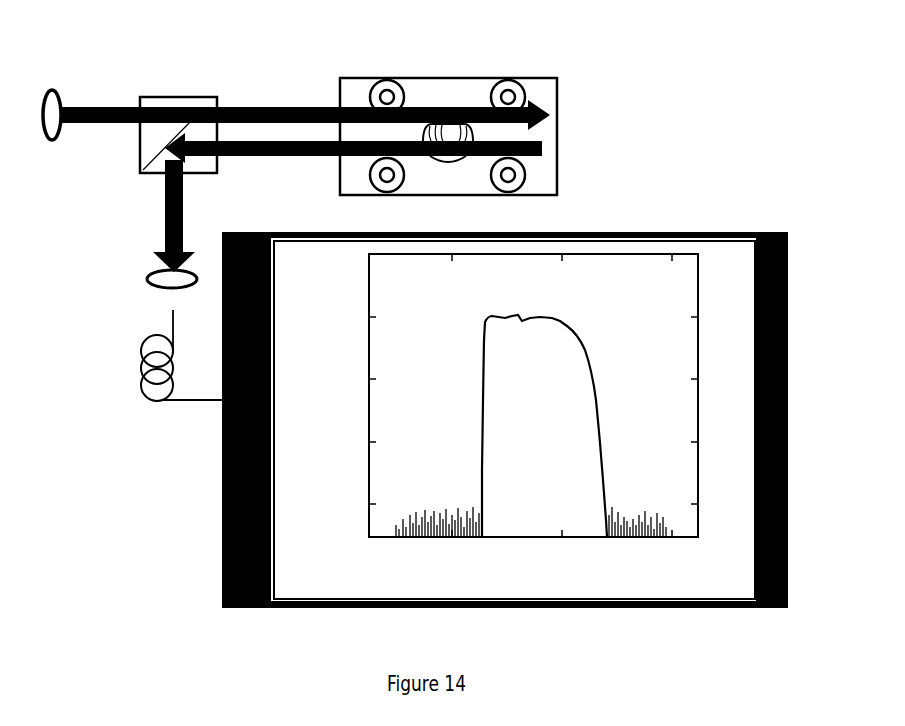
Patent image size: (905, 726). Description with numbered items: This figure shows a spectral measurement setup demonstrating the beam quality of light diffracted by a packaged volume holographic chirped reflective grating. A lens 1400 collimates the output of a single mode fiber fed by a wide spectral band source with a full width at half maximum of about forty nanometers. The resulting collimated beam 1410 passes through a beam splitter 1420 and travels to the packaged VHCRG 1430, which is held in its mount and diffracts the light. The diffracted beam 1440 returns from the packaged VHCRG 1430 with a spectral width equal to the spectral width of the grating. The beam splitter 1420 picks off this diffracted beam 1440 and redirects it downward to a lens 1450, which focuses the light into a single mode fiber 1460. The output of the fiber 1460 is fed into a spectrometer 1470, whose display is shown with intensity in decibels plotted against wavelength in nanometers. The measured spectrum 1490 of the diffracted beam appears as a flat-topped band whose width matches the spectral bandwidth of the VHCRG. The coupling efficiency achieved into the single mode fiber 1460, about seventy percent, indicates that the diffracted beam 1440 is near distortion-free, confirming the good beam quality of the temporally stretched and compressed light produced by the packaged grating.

The lens 1400 is at (53, 147).
The collimated beam 1410 is at (76, 103).
The beam splitter 1420 is at (167, 95).
The packaged VHCRG 1430 is at (543, 77).
The diffracted beam 1440 is at (263, 157).
The lens 1450 is at (147, 278).
The single mode fiber 1460 is at (140, 344).
The spectrometer 1470 is at (253, 608).
The spectrum 1490 is at (683, 583).